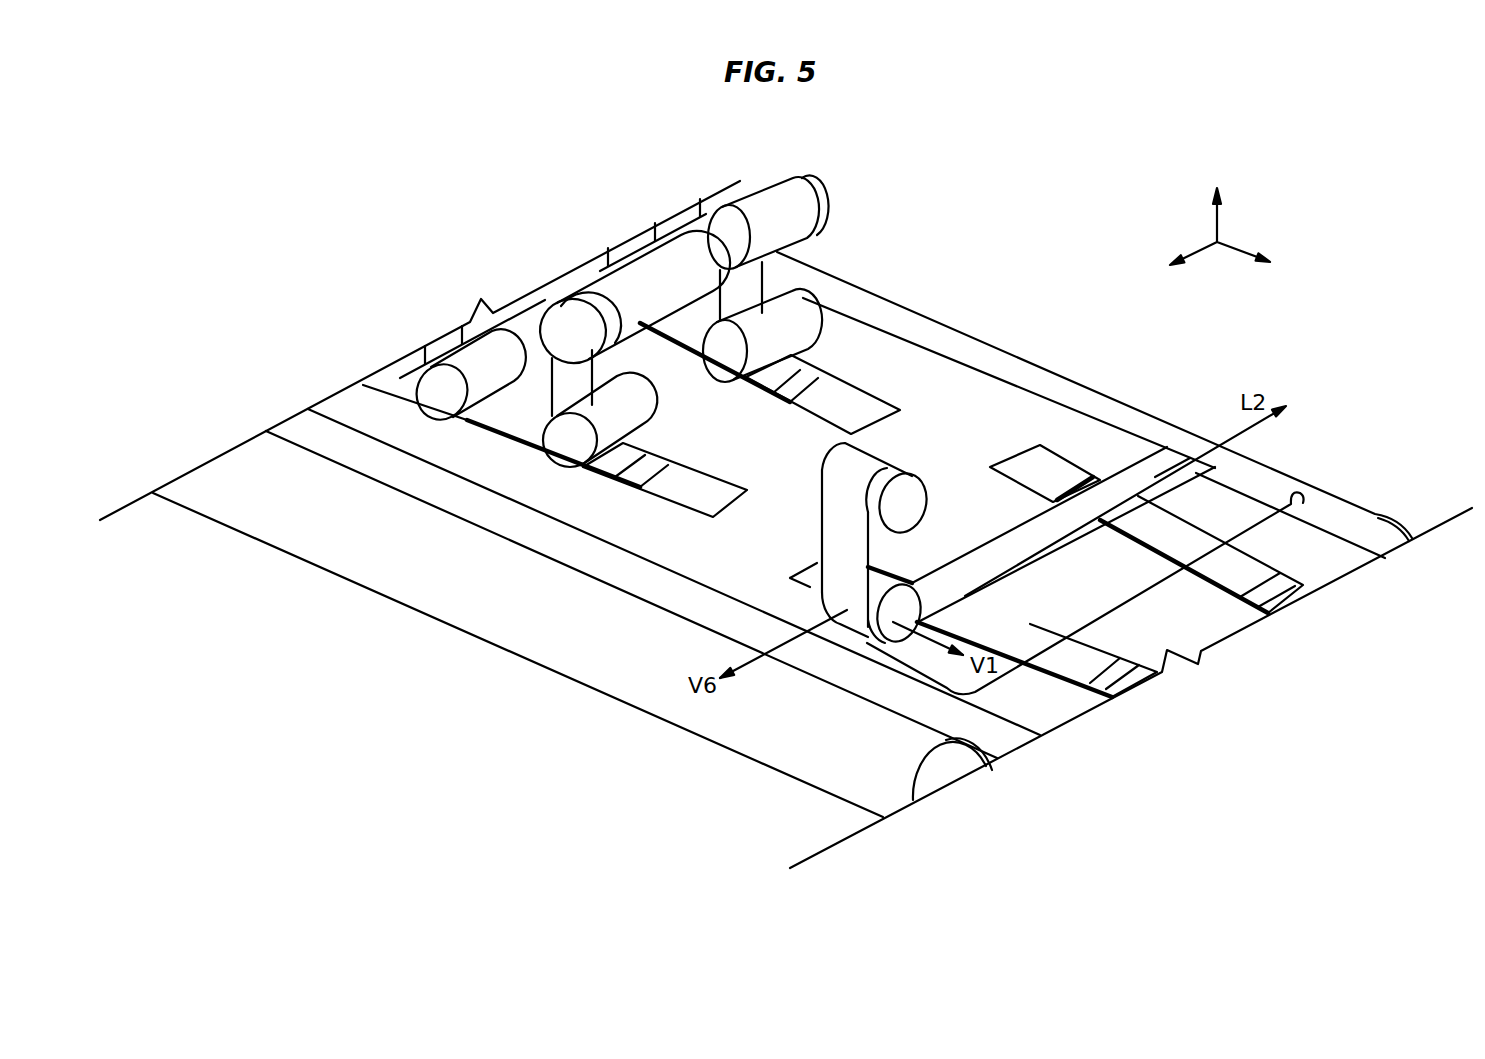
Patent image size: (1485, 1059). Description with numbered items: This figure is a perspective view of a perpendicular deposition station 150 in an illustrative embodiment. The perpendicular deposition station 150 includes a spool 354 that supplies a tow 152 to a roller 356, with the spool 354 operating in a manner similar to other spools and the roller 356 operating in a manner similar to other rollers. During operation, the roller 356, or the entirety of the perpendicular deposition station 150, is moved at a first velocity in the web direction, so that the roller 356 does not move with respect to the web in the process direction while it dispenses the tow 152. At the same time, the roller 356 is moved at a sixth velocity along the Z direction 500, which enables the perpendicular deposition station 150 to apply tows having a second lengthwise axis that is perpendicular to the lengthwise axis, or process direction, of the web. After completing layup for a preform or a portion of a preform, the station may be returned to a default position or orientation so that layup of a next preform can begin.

The perpendicular deposition station 150 is at (1122, 602).
The tow 152 is at (1028, 533).
The spool 354 is at (819, 476).
The roller 356 is at (882, 583).
The Z direction 500 is at (1190, 245).